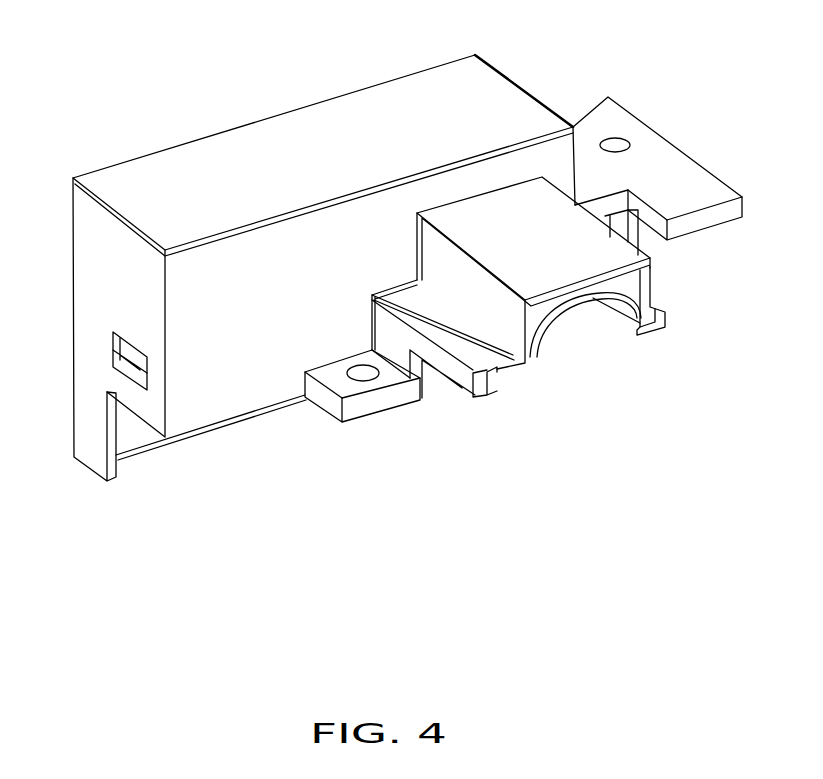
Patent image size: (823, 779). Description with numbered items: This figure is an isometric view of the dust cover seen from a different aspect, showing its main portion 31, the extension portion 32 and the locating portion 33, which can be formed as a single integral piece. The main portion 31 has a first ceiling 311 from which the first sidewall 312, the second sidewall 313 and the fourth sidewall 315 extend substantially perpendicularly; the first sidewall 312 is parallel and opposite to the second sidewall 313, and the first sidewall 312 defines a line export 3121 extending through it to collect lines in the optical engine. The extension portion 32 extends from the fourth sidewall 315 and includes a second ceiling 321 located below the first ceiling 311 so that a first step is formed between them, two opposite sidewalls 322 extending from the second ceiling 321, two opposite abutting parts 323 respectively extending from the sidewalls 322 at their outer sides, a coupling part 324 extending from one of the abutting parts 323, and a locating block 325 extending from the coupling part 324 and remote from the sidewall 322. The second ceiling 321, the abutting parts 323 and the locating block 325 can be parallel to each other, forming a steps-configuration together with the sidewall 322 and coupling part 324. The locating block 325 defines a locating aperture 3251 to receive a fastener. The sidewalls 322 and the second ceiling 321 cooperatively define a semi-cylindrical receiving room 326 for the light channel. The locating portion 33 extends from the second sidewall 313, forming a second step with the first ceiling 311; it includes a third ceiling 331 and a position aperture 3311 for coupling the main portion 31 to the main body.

The main portion 31 is at (292, 266).
The first ceiling 311 is at (378, 98).
The first sidewall 312 is at (87, 329).
The line export 3121 is at (128, 378).
The second sidewall 313 is at (493, 63).
The fourth sidewall 315 is at (225, 378).
The extension portion 32 is at (510, 336).
The second ceiling 321 is at (612, 258).
The sidewalls 322 is at (597, 372).
The abutting parts 323 is at (660, 316).
The coupling part 324 is at (405, 335).
The locating block 325 is at (349, 418).
The locating aperture 3251 is at (360, 375).
The receiving room 326 is at (602, 303).
The locating portion 33 is at (680, 167).
The third ceiling 331 is at (703, 186).
The position aperture 3311 is at (617, 140).